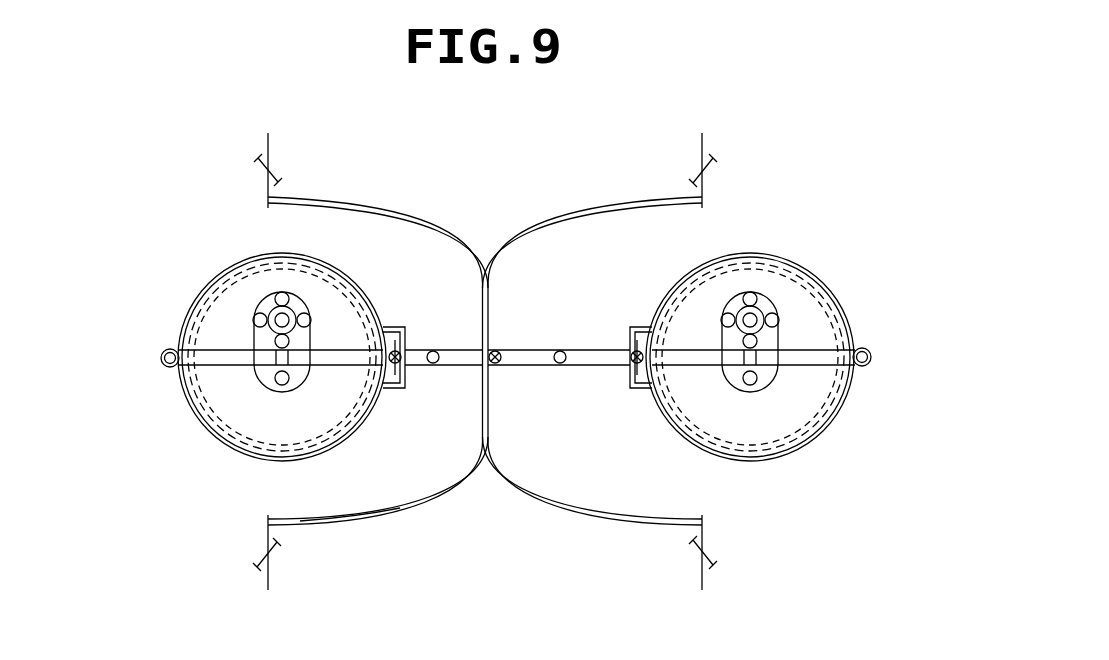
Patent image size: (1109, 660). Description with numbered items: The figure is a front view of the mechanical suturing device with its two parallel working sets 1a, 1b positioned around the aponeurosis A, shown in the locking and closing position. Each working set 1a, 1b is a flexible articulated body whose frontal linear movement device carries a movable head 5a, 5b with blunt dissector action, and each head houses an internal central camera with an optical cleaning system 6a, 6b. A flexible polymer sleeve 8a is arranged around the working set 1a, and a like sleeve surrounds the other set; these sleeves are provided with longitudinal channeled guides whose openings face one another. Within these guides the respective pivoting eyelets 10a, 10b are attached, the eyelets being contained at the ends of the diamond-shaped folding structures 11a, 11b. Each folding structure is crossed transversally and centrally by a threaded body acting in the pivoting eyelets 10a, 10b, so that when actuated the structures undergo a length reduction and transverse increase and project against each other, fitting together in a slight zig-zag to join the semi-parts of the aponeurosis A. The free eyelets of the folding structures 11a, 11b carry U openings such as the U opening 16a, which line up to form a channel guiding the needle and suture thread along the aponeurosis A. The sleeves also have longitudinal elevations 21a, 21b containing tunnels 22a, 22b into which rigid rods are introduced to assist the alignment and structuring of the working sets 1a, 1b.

The working set 1a is at (269, 359).
The working set 1b is at (805, 355).
The movable head 5a is at (228, 356).
The movable head 5b is at (805, 355).
The internal central camera with optical cleaning system 6a is at (302, 376).
The internal central camera with optical cleaning system 6b is at (641, 350).
The flexible polymer sleeve 8a is at (232, 440).
The pivoting eyelet 10a is at (399, 386).
The pivoting eyelet 10b is at (642, 388).
The diamond-shaped folding structure 11a is at (462, 352).
The diamond-shaped folding structure 11b is at (589, 352).
The "U" opening 16a is at (497, 366).
The longitudinal elevation 21a is at (164, 366).
The longitudinal elevation 21b is at (870, 351).
The tunnel 22a is at (164, 351).
The tunnel 22b is at (870, 365).
The aponeurosis A is at (402, 512).